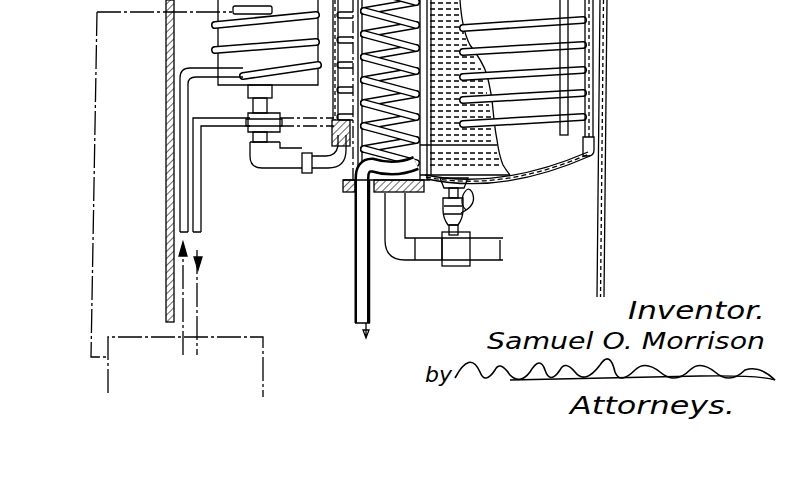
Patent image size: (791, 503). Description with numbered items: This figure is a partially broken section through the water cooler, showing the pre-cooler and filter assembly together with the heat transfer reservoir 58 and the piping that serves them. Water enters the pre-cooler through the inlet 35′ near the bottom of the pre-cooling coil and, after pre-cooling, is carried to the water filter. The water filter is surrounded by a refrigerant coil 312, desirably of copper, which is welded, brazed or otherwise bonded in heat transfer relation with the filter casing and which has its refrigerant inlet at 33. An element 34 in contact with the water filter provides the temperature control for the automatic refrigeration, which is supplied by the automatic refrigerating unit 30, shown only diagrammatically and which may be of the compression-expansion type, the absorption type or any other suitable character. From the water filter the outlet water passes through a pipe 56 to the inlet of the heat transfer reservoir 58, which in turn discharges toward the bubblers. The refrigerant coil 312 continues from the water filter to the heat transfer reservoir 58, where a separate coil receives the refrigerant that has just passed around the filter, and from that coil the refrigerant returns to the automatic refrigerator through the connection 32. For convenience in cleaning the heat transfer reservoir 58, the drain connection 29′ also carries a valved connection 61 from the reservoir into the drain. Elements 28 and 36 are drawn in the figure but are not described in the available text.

The heating body 28 is at (425, 158).
The drain connection 29′ is at (429, 260).
The automatic refrigerating unit 30 is at (190, 383).
The refrigerant coil 312 is at (207, 68).
The connection 32 is at (201, 228).
The inlet 33 is at (185, 222).
The temperature control element 34 is at (232, 12).
The inlet 35′ is at (359, 289).
The connecting pipe 36 is at (352, 148).
The pipe 56 is at (295, 172).
The heat transfer reservoir 58 is at (595, 22).
The valved connection 61 is at (468, 208).